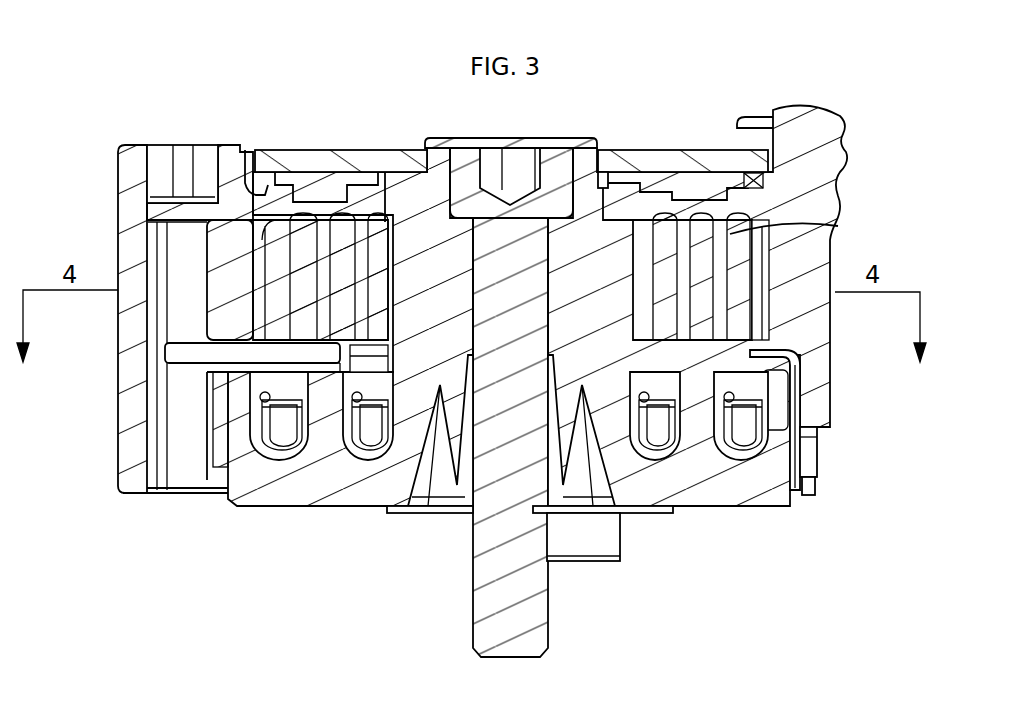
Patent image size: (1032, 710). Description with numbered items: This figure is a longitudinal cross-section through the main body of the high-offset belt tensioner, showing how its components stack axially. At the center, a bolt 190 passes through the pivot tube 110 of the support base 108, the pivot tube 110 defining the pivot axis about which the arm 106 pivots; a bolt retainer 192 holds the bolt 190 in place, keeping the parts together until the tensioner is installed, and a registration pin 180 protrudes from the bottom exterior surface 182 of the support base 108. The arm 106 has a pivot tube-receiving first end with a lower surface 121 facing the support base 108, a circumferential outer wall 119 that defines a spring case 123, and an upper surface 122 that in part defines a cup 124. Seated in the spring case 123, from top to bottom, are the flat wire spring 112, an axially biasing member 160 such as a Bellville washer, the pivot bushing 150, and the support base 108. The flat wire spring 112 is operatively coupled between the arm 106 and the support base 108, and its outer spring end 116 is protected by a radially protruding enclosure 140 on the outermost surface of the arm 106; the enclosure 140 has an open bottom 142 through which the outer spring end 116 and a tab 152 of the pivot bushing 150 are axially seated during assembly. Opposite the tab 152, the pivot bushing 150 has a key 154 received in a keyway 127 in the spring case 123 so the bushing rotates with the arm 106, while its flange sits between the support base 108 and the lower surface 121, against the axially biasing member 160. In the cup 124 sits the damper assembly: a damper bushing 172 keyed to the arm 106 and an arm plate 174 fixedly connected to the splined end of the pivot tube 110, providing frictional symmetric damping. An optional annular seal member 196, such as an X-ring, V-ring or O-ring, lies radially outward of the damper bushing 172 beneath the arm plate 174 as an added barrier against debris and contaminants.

The arm 106 is at (833, 170).
The support base 108 is at (293, 495).
The pivot tube 110 is at (418, 190).
The flat wire spring 112 is at (780, 310).
The outer spring end 116 is at (212, 232).
The circumferential outer wall 119 is at (125, 445).
The lower surface 121 is at (213, 238).
The upper surface 122 is at (615, 176).
The spring case 123 is at (835, 224).
The cup 124 is at (755, 117).
The keyway 127 is at (808, 497).
The enclosure 140 is at (132, 500).
The open bottom 142 is at (167, 500).
The pivot bushing 150 is at (217, 465).
The tab 152 is at (172, 357).
The key 154 is at (805, 455).
The axially biasing member 160 is at (800, 355).
The damper bushing 172 is at (315, 178).
The arm plate 174 is at (690, 160).
The registration pin 180 is at (603, 545).
The bottom exterior surface 182 is at (355, 510).
The bolt 190 is at (533, 608).
The bolt retainer 192 is at (695, 512).
The annular seal member 196 is at (250, 180).